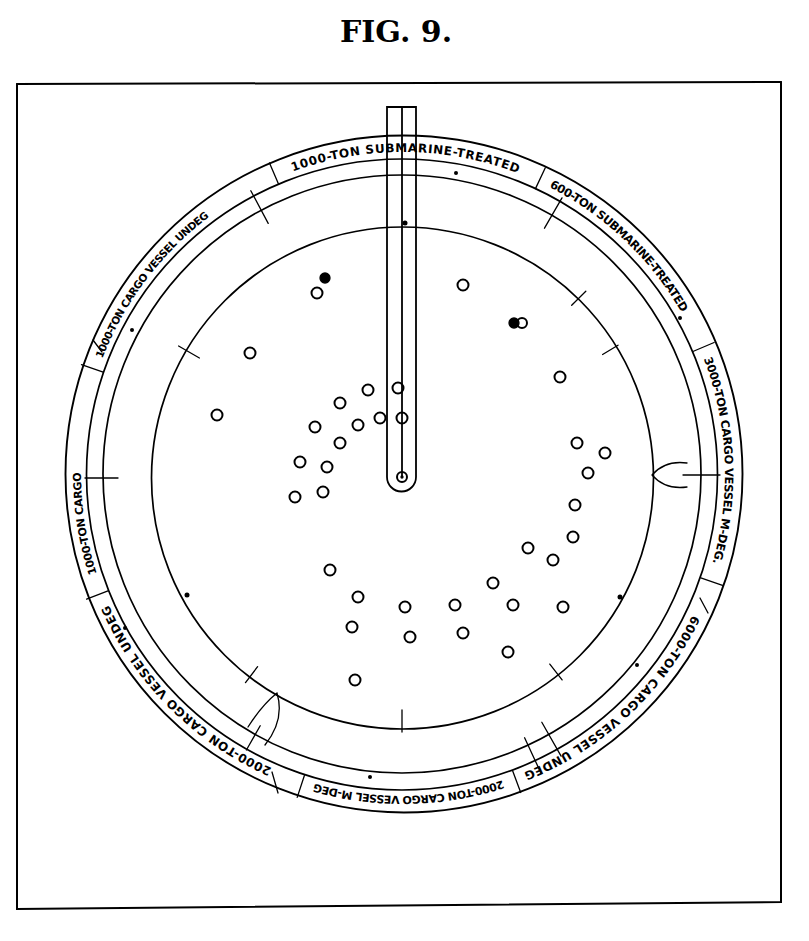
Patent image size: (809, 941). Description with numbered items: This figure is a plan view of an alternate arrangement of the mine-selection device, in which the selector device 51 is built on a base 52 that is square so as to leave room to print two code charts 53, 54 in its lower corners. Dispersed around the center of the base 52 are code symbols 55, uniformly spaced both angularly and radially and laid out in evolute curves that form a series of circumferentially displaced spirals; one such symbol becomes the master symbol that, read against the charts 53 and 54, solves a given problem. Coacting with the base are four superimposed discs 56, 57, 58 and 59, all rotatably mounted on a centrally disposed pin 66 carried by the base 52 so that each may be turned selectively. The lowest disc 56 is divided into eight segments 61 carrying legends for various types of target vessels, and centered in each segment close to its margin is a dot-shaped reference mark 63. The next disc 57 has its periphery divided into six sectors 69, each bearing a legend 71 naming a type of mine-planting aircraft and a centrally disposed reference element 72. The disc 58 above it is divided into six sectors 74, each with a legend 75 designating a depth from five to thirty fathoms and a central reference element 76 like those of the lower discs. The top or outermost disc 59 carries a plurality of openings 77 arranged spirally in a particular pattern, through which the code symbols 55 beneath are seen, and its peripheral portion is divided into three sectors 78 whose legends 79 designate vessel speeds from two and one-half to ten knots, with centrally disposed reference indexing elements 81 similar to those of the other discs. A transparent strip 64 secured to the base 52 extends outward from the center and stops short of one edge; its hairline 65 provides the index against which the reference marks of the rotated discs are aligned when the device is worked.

The selector device 51 is at (586, 91).
The base 52 is at (511, 89).
The code chart 53 is at (33, 668).
The code chart 54 is at (693, 711).
The code symbols 55 is at (330, 278).
The disc 56 is at (289, 790).
The disc 57 is at (530, 785).
The disc 58 is at (546, 780).
The disc 59 is at (413, 553).
The segments 61 is at (88, 357).
The reference mark 63 is at (163, 242).
The transparent strip 64 is at (387, 320).
The hairline 65 is at (417, 118).
The pin 66 is at (417, 477).
The sectors 69 is at (275, 165).
The legend 71 is at (100, 420).
The reference element 72 is at (132, 330).
The sectors 74 is at (258, 195).
The legend 75 is at (168, 313).
The reference element 76 is at (170, 300).
The openings 77 is at (312, 292).
The sectors 78 is at (576, 294).
The legend 79 is at (445, 237).
The reference indexing element 81 is at (405, 223).